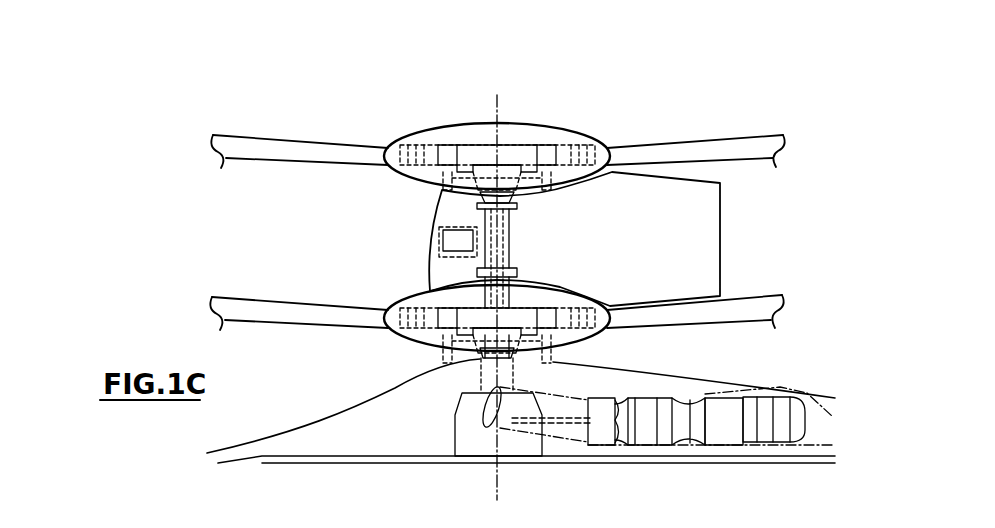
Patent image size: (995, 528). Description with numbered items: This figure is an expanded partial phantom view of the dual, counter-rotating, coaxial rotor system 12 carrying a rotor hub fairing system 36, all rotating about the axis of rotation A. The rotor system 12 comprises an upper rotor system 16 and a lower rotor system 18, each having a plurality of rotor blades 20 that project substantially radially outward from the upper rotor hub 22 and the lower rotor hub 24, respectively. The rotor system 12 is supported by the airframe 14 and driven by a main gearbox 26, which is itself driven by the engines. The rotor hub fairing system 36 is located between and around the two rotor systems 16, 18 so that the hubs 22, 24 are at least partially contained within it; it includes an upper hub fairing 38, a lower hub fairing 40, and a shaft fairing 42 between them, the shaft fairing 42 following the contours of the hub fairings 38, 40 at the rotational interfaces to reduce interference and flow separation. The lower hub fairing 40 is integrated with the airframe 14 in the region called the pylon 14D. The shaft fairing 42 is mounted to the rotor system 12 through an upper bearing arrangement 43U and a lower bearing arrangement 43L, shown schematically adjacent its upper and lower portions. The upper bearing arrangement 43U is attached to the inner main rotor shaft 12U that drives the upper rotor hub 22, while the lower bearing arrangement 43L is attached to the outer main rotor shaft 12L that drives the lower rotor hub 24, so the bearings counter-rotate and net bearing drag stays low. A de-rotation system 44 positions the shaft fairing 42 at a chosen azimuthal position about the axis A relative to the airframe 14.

The counter-rotating coaxial rotor system 12 is at (387, 339).
The inner main rotor shaft 12U is at (510, 236).
The outer main rotor shaft 12L is at (479, 383).
The airframe 14 is at (290, 464).
The pylon 14D is at (376, 399).
The upper rotor system 16 is at (612, 129).
The lower rotor system 18 is at (605, 300).
The rotor blades 20 is at (727, 159).
The upper rotor hub 22 is at (514, 150).
The lower rotor hub 24 is at (512, 330).
The main gearbox 26 is at (456, 428).
The rotor hub fairing system 36 is at (610, 92).
The upper hub fairing 38 is at (443, 125).
The lower hub fairing 40 is at (386, 298).
The shaft fairing 42 is at (703, 238).
The upper bearing arrangement 43U is at (518, 205).
The lower bearing arrangement 43L is at (518, 272).
The de-rotation system 44 is at (458, 242).
The axis of rotation A is at (498, 104).